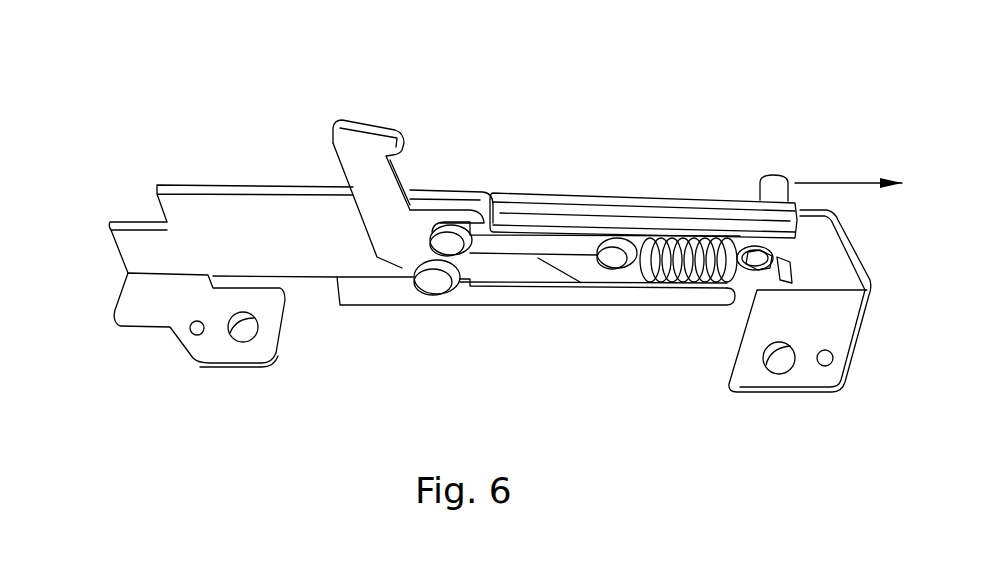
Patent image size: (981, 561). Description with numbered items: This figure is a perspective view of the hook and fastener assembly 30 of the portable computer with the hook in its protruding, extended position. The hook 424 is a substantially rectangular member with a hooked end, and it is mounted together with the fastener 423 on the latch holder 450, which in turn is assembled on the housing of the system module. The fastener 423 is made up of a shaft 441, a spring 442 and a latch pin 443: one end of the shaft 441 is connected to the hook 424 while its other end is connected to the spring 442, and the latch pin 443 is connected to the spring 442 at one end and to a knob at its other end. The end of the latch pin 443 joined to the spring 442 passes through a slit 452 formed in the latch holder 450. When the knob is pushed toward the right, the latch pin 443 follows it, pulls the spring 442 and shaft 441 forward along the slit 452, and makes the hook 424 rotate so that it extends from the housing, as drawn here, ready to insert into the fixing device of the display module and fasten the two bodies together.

The latch mechanism 30 is at (762, 80).
The fastener 423 is at (100, 185).
The hook 424 is at (375, 122).
The shaft 441 is at (513, 247).
The spring 442 is at (677, 282).
The latch pin 443 is at (780, 174).
The latch holder 450 is at (218, 185).
The slit 452 is at (772, 246).